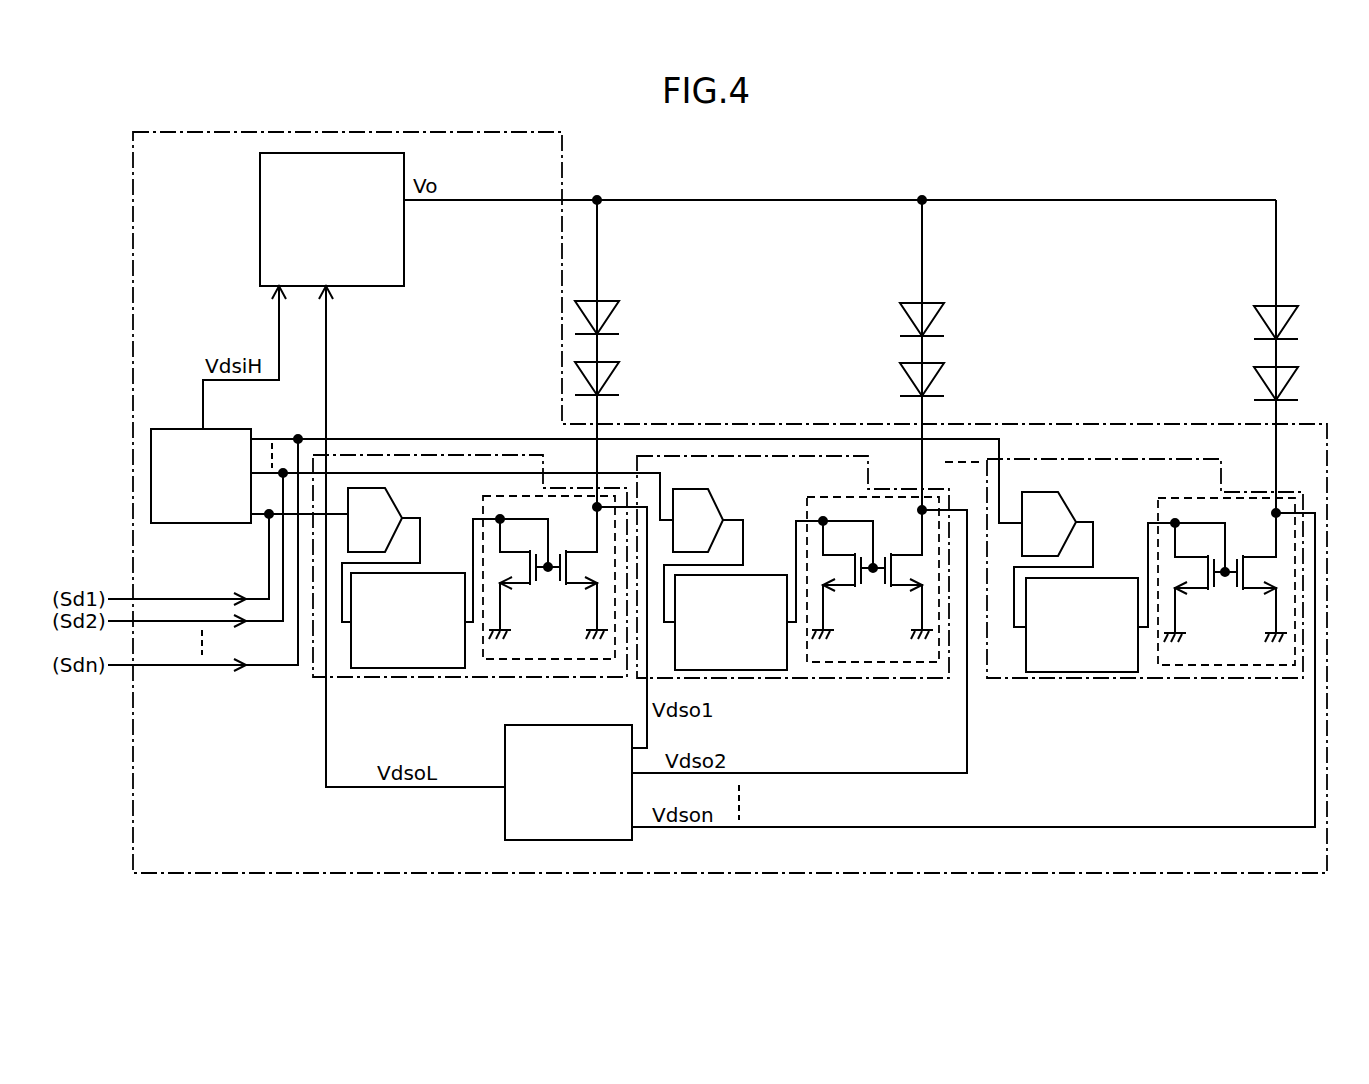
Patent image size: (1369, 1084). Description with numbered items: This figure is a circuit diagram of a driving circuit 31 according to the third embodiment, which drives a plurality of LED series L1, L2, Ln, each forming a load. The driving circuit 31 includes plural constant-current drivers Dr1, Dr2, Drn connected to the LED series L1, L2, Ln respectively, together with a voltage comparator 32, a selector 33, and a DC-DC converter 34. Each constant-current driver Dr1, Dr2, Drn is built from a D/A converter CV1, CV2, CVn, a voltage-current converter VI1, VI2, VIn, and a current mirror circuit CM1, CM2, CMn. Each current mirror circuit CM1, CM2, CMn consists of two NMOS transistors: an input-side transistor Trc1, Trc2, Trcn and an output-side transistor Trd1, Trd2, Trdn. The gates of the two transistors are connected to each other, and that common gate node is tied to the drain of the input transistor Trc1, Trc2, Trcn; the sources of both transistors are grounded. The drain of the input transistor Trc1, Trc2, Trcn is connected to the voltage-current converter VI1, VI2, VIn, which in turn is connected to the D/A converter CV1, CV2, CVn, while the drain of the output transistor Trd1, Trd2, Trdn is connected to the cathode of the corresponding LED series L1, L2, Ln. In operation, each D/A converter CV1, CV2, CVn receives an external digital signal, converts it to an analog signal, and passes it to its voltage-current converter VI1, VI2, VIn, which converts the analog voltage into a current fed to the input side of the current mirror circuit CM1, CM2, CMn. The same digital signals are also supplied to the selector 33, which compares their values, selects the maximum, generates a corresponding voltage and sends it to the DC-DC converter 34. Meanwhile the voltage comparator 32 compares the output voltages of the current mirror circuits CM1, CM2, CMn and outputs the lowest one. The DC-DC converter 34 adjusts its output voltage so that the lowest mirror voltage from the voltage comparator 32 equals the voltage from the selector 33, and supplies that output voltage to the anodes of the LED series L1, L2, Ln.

The driving circuit 31 is at (1167, 874).
The voltage comparator 32 is at (505, 818).
The selector 33 is at (196, 523).
The DC-DC converter 34 is at (260, 235).
The LED series L1 is at (632, 293).
The LED series L2 is at (957, 295).
The LED series Ln is at (1310, 298).
The constant-current driver Dr1 is at (470, 588).
The constant-current driver Dr2 is at (793, 588).
The constant-current driver Drn is at (1145, 589).
The D/A converter CV1 is at (415, 505).
The D/A converter CV2 is at (740, 507).
The D/A converter CVn is at (1076, 522).
The voltage-current converter VI1 is at (441, 573).
The voltage-current converter VI2 is at (763, 575).
The voltage-current converter VIn is at (1113, 578).
The current mirror circuit CM1 is at (549, 609).
The current mirror circuit CM2 is at (873, 608).
The current mirror circuit CMn is at (1226, 609).
The NMOS transistor Trc1 is at (518, 579).
The NMOS transistor Trd1 is at (578, 573).
The NMOS transistor Trc2 is at (842, 580).
The NMOS transistor Trd2 is at (903, 574).
The NMOS transistor Trcn is at (1194, 582).
The NMOS transistor Trdn is at (1256, 577).